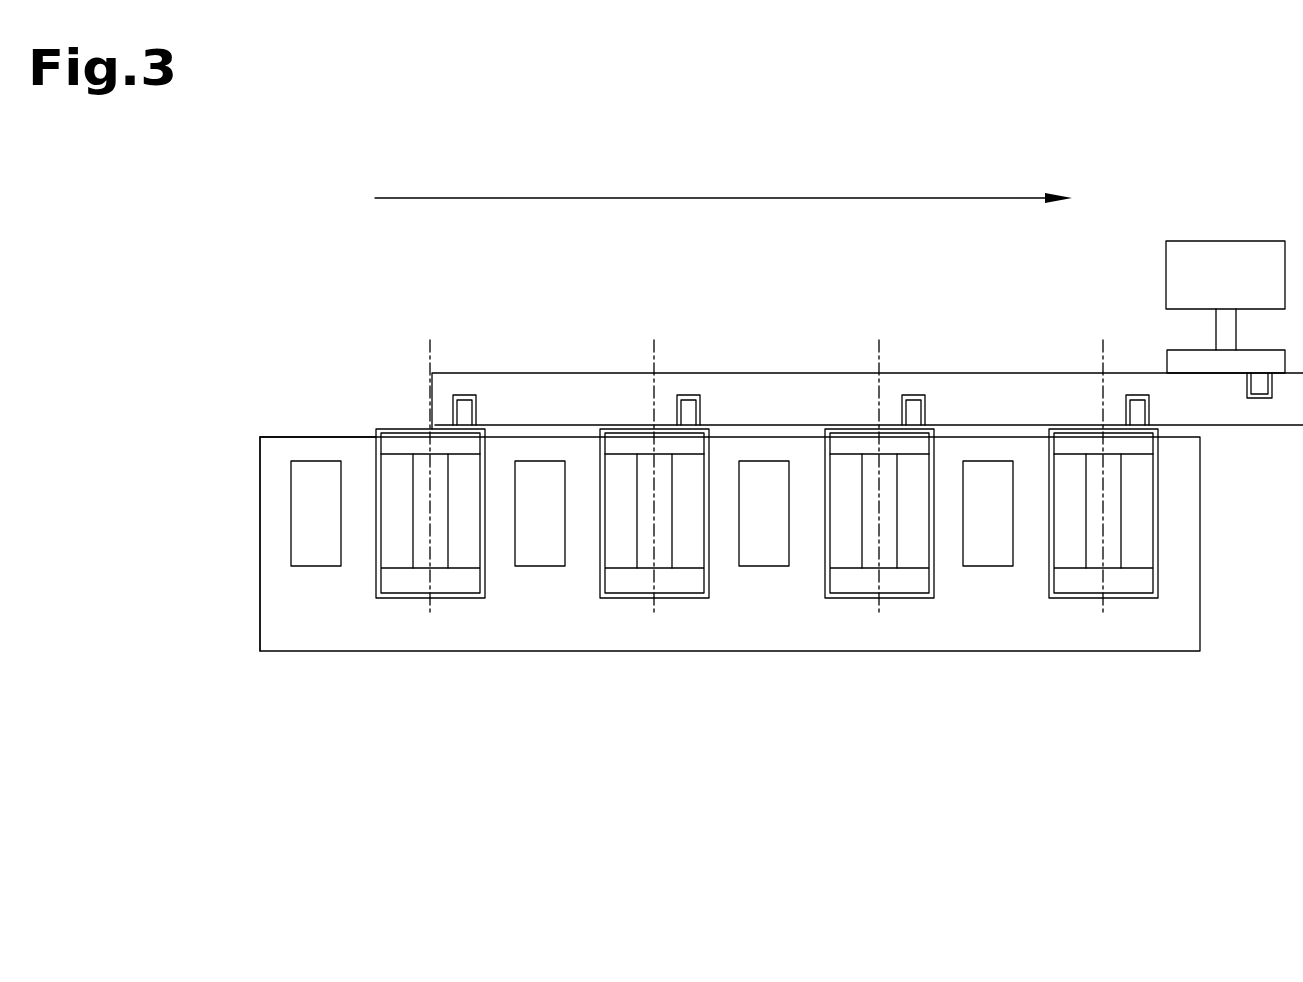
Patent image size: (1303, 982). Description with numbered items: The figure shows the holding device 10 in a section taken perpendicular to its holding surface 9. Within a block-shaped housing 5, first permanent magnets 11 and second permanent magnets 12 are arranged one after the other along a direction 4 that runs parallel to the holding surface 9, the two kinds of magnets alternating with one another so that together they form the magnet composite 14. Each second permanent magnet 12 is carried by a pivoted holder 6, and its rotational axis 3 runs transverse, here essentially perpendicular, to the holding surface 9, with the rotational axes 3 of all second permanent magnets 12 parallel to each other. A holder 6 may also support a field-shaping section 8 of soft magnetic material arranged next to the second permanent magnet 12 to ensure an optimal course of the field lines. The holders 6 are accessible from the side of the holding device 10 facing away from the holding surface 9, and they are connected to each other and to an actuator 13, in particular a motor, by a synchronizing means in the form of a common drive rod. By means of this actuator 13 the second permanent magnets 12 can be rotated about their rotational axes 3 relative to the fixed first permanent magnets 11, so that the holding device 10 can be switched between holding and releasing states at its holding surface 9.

The rotational axis 3 is at (440, 358).
The direction 4 is at (707, 199).
The housing 5 is at (313, 437).
The holder 6 is at (442, 580).
The field-shaping section 8 is at (463, 526).
The holding surface 9 is at (690, 652).
The holding device 10 is at (183, 335).
The first permanent magnet 11 is at (315, 567).
The second permanent magnet 12 is at (422, 468).
The actuator 13 is at (1245, 283).
The magnet composite 14 is at (230, 560).